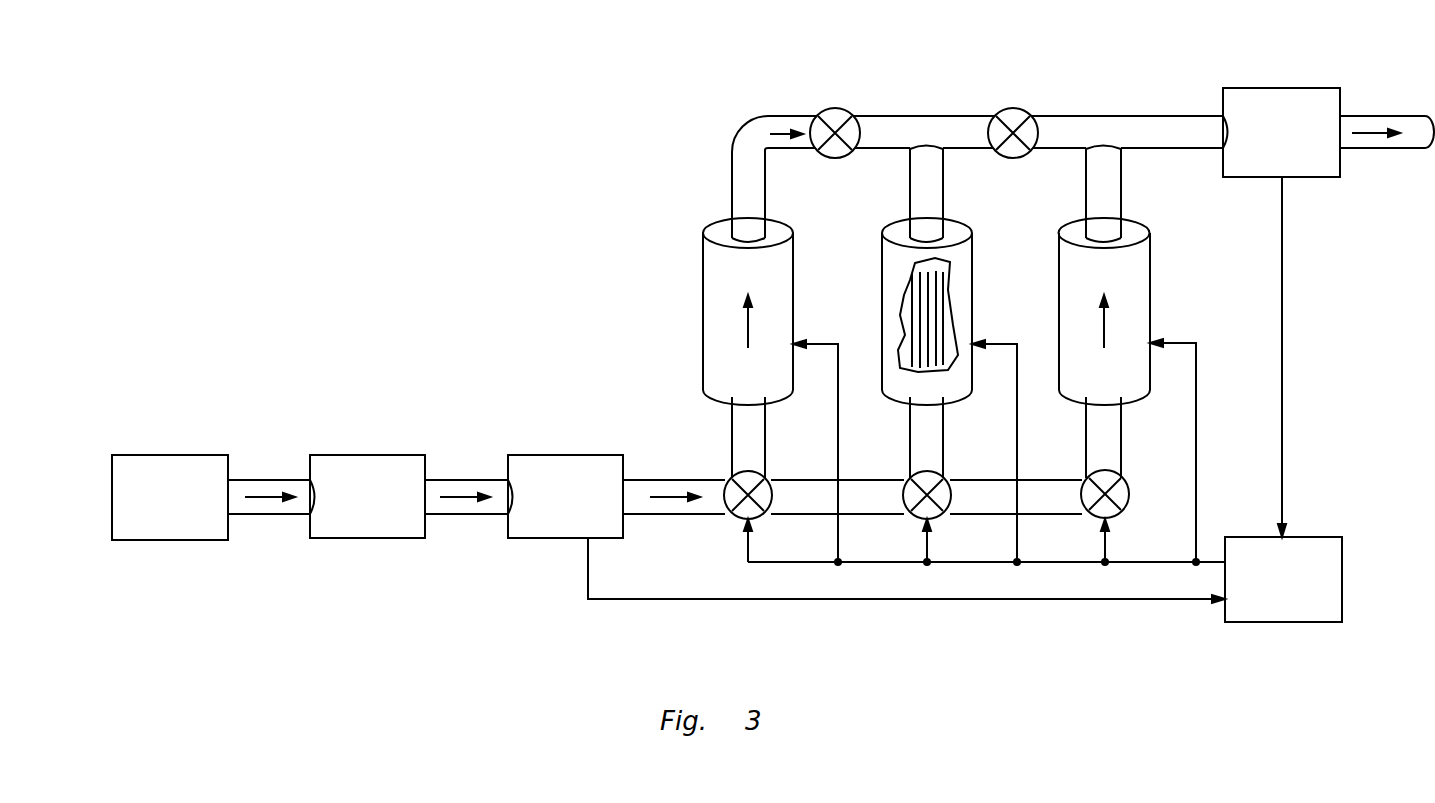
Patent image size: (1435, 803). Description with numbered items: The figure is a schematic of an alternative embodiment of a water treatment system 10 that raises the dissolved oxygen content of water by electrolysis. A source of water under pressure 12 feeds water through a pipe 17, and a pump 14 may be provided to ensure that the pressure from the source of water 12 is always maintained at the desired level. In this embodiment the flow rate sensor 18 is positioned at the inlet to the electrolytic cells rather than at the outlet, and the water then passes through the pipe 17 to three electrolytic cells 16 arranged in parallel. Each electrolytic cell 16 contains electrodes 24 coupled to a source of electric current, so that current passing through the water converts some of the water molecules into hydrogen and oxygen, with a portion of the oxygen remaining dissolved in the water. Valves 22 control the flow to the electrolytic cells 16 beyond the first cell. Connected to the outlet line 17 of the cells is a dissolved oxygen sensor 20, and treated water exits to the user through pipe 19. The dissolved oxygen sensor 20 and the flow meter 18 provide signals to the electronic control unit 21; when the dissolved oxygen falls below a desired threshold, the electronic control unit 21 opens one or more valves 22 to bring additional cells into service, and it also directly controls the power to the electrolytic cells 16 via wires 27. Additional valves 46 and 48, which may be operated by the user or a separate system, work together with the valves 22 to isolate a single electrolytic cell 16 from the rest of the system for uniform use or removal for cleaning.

The exhaust gas treatment system 10 is at (506, 230).
The source of water under pressure 12 is at (178, 455).
The pump 14 is at (365, 455).
The electrolytic cell 16 is at (795, 267).
The pipe 17 is at (258, 515).
The flow rate sensor 18 is at (560, 455).
The pipe to user 19 is at (1375, 149).
The dissolved oxygen sensor 20 is at (1283, 88).
The electronic control unit 21 is at (1280, 622).
The valve 22 is at (772, 497).
The electrode 24 is at (930, 312).
The wire 27 is at (839, 402).
The valve 46 is at (825, 97).
The valve 48 is at (1018, 88).